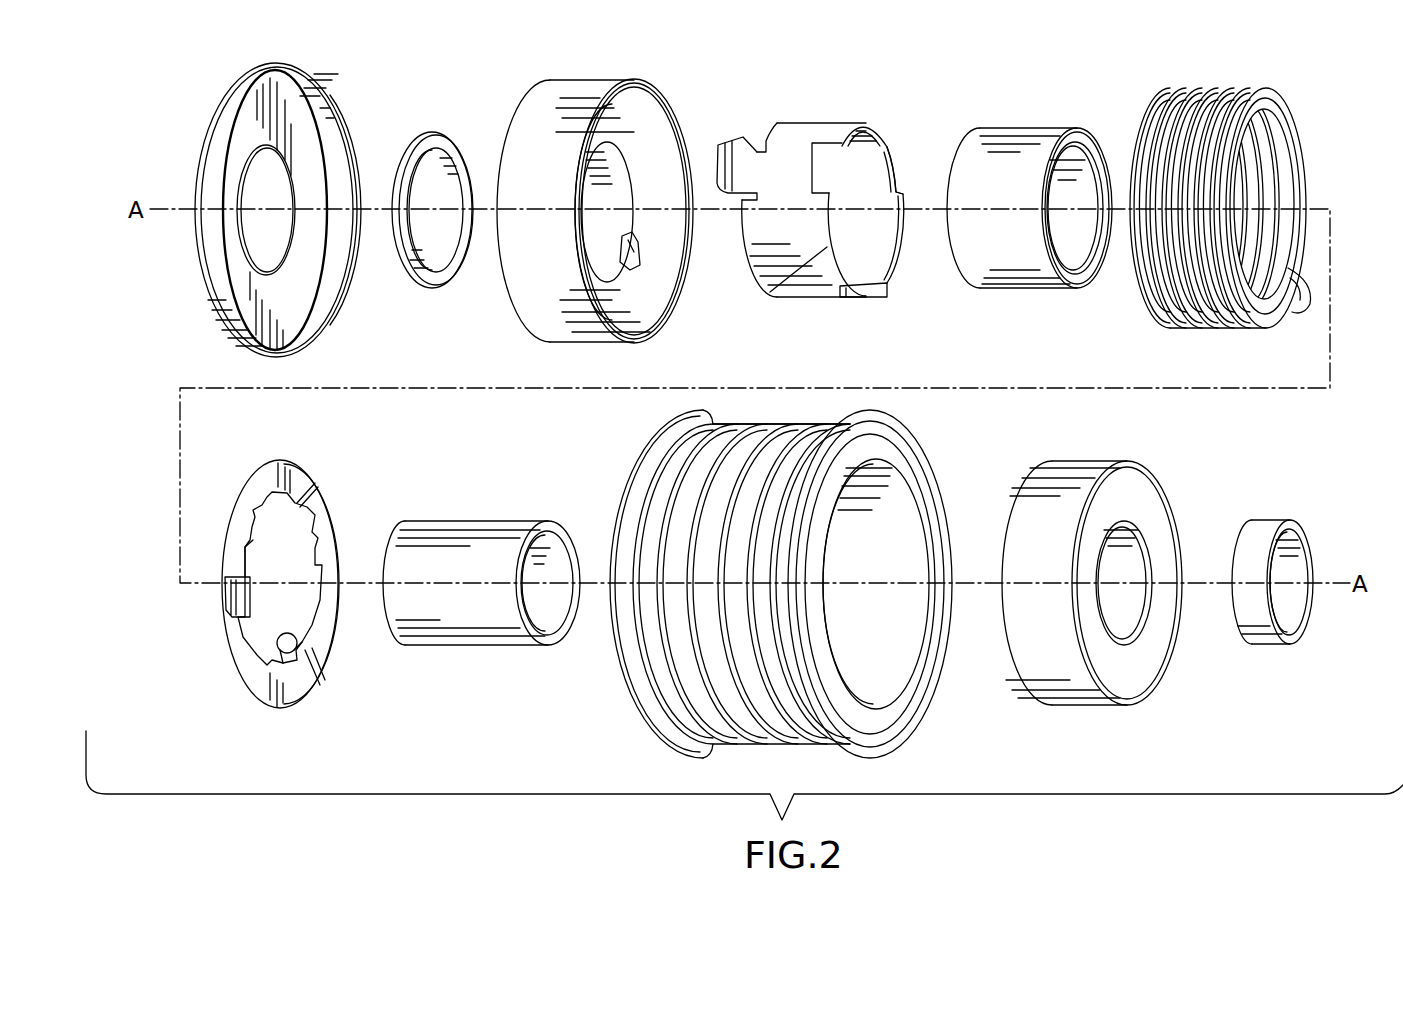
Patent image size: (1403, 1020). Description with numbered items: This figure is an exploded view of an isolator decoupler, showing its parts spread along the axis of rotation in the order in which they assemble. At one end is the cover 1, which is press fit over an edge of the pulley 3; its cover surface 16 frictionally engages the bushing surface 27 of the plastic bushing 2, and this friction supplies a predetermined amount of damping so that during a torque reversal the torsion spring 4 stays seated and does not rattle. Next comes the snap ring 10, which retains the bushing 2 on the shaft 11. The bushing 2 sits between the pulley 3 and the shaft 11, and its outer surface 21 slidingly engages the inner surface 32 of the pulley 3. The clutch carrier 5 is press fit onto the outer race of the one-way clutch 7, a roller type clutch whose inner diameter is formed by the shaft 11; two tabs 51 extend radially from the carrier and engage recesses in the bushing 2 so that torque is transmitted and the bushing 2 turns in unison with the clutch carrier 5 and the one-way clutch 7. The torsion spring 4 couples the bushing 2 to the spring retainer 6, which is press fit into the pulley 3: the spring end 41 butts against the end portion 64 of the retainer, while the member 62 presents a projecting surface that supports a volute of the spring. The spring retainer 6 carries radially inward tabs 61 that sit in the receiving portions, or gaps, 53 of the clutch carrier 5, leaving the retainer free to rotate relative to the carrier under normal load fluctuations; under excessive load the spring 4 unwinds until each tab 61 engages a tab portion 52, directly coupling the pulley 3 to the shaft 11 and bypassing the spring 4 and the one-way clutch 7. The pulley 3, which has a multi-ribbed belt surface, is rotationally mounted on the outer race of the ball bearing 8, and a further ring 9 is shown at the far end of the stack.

The cover 1 is at (238, 92).
The cover surface 16 is at (300, 108).
The snap ring 10 is at (425, 130).
The bushing 2 is at (576, 80).
The bushing surface 27 is at (508, 128).
The outer surface 21 is at (520, 296).
The clutch carrier 5 is at (812, 124).
The tabs 51 is at (730, 140).
The tab portions 52 is at (880, 130).
The receiving portions 53 is at (902, 172).
The one-way clutch 7 is at (1020, 128).
The torsion spring 4 is at (1200, 90).
The end 41 is at (1302, 304).
The spring retainer 6 is at (266, 462).
The tabs 61 is at (250, 547).
The member 62 is at (224, 596).
The end portion 64 is at (298, 640).
The shaft 11 is at (498, 528).
The pulley 3 is at (918, 436).
The inner surface 32 is at (620, 722).
The ball bearing 8 is at (1096, 458).
The retaining ring 9 is at (1272, 520).